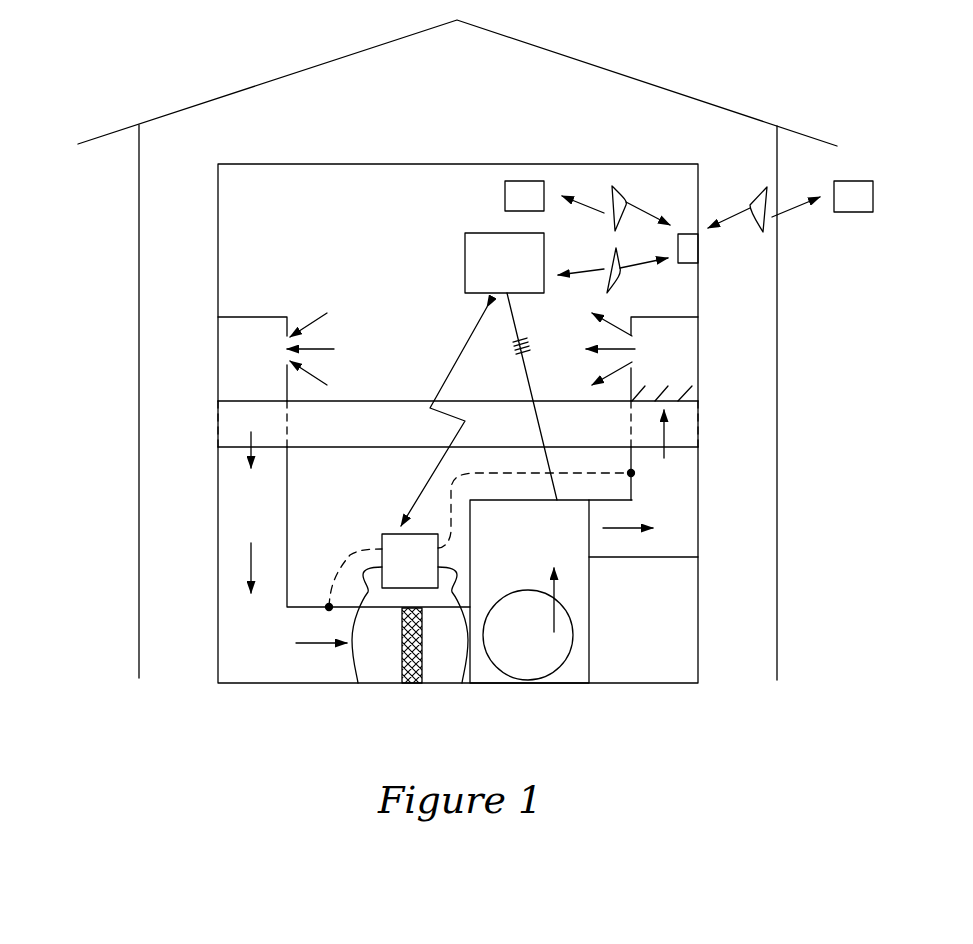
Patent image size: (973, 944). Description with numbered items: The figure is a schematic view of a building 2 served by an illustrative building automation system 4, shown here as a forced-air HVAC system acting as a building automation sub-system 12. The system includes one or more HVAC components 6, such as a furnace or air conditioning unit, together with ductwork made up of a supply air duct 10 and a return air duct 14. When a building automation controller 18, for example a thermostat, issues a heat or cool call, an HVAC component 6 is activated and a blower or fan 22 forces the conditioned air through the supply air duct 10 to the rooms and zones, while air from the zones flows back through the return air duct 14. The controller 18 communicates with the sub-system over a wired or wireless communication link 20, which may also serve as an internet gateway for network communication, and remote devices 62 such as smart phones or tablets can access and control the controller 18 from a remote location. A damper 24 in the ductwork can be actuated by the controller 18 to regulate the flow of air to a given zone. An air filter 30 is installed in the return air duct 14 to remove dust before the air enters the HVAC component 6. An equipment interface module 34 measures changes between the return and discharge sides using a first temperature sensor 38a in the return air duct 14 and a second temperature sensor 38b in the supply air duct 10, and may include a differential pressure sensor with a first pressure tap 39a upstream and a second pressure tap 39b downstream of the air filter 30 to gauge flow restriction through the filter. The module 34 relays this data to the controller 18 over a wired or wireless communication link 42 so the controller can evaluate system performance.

The building 2 is at (645, 82).
The building automation system 4 is at (670, 652).
The HVAC component 6 is at (590, 622).
The supply air duct 10 is at (666, 515).
The building automation sub-system 12 is at (632, 664).
The return air duct 14 is at (243, 518).
The building automation controller 18 is at (465, 262).
The wired or wireless communication link 20 is at (698, 250).
The blower or fan 22 is at (563, 665).
The damper 24 is at (698, 395).
The air filter 30 is at (409, 683).
The equipment interface module 34 is at (392, 534).
The first temperature sensor 38a is at (329, 607).
The second temperature sensor 38b is at (632, 473).
The first pressure tap 39a is at (358, 683).
The second pressure tap 39b is at (462, 683).
The wired or wireless communication link 42 is at (461, 352).
The remote device 62 is at (505, 195).